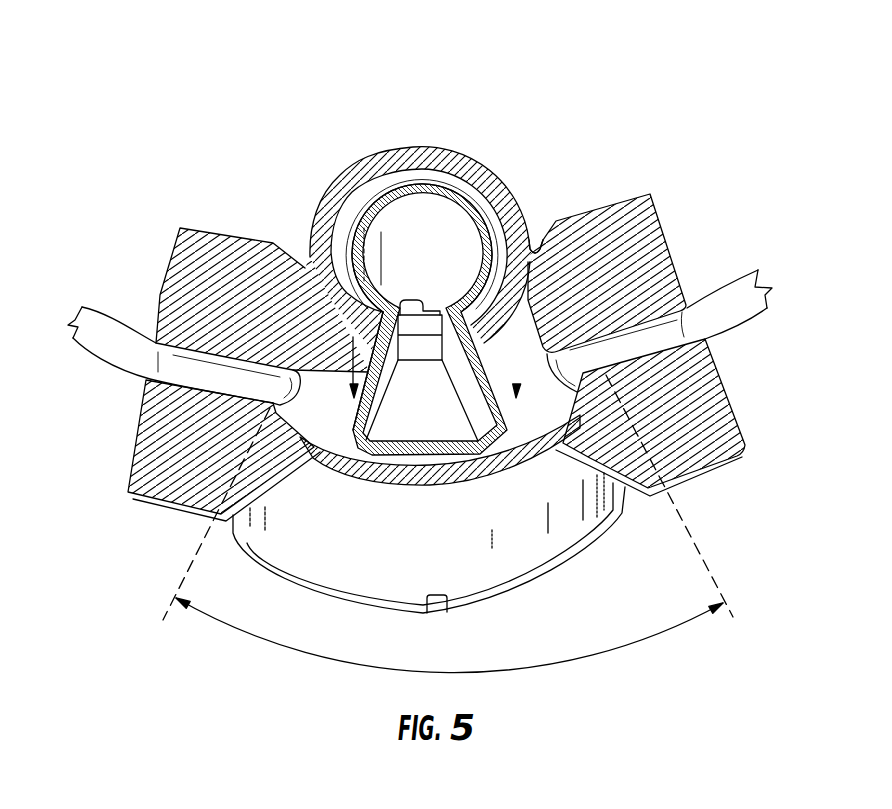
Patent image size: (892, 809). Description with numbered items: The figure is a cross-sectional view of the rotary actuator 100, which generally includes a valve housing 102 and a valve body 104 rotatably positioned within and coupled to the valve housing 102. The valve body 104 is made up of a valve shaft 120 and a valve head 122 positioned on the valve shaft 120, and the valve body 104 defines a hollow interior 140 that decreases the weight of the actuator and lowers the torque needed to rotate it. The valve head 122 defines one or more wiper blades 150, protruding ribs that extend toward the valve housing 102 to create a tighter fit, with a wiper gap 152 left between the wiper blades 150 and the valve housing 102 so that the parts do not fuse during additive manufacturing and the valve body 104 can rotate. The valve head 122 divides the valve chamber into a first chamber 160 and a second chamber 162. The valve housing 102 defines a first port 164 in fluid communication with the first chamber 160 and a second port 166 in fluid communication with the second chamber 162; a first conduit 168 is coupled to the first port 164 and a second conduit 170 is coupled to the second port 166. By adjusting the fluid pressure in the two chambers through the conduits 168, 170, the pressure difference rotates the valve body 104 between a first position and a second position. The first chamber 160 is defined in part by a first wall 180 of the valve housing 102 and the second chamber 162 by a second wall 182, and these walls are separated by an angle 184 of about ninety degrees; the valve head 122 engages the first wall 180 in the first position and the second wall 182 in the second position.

The rotary actuator 100 is at (235, 68).
The valve housing 102 is at (600, 240).
The valve body 104 is at (473, 210).
The valve shaft 120 is at (363, 207).
The valve head 122 is at (353, 332).
The hollow interior 140 is at (442, 262).
The wiper blade 150 is at (418, 172).
The wiper gap 152 is at (419, 155).
The first chamber 160 is at (308, 262).
The second chamber 162 is at (517, 384).
The first port 164 is at (214, 382).
The second port 166 is at (672, 335).
The first conduit 168 is at (103, 362).
The second conduit 170 is at (740, 318).
The first wall 180 is at (333, 386).
The second wall 182 is at (539, 374).
The angle 184 is at (637, 643).